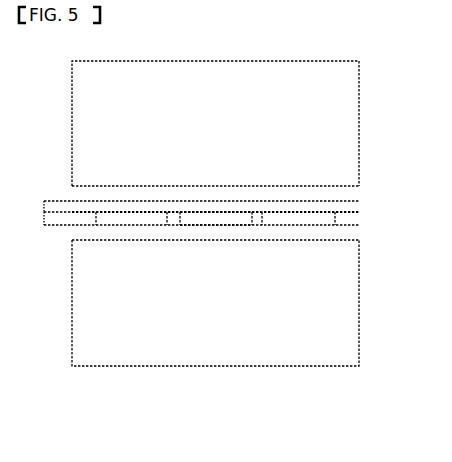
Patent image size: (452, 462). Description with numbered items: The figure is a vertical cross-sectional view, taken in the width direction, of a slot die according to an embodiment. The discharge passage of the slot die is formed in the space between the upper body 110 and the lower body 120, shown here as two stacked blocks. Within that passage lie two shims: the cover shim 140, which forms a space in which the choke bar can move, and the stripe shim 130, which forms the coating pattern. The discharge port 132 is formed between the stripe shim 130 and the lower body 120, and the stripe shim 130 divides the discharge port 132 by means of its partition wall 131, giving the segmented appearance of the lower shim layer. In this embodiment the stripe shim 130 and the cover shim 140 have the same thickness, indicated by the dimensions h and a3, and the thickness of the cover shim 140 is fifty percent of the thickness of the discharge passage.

The upper body 110 is at (360, 121).
The lower body 120 is at (360, 290).
The stripe shim 130 is at (360, 218).
The partition wall 131 is at (175, 218).
The discharge port 132 is at (213, 222).
The cover shim 140 is at (360, 207).
The thickness of the cover shim a3 is at (44, 206).
The thickness of the stripe shim h is at (44, 218).